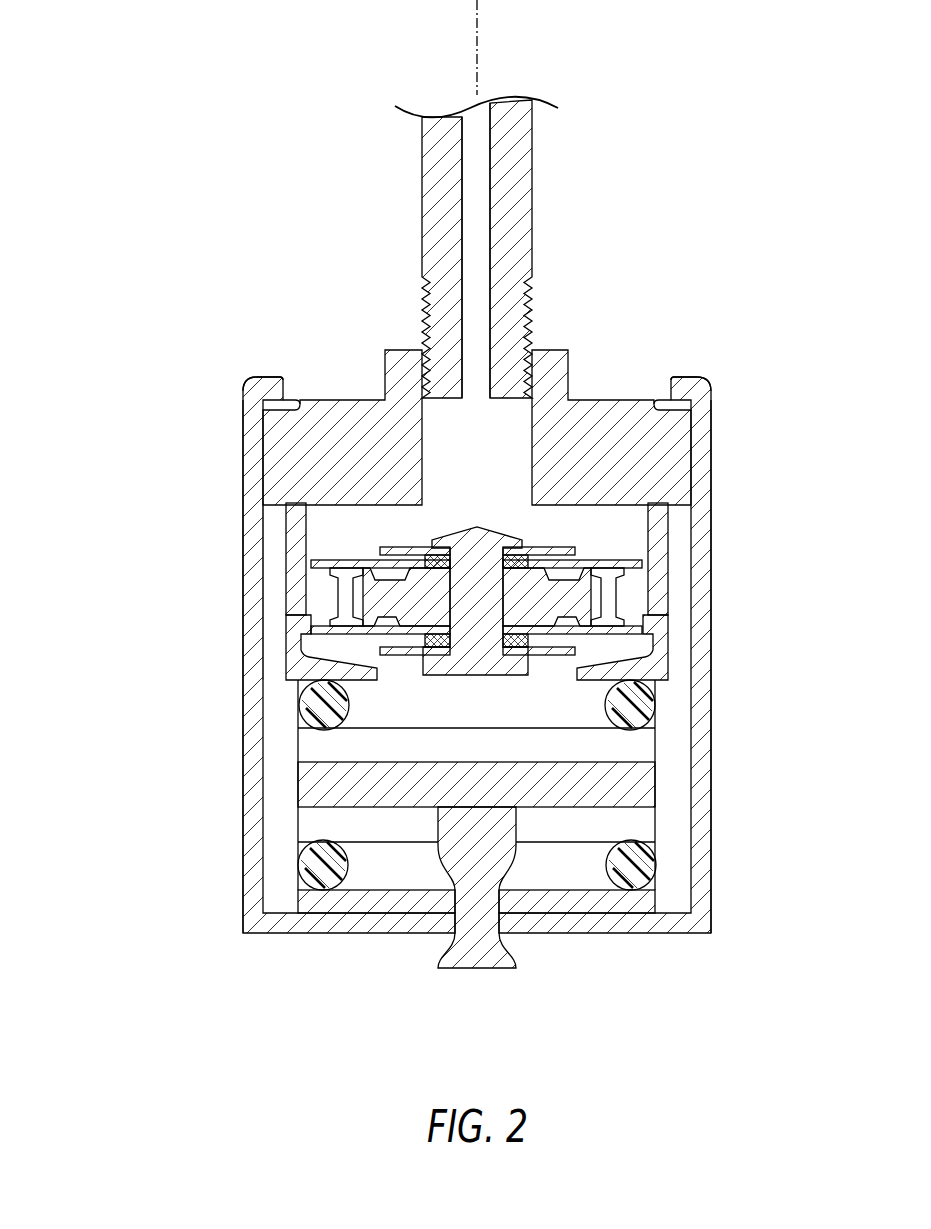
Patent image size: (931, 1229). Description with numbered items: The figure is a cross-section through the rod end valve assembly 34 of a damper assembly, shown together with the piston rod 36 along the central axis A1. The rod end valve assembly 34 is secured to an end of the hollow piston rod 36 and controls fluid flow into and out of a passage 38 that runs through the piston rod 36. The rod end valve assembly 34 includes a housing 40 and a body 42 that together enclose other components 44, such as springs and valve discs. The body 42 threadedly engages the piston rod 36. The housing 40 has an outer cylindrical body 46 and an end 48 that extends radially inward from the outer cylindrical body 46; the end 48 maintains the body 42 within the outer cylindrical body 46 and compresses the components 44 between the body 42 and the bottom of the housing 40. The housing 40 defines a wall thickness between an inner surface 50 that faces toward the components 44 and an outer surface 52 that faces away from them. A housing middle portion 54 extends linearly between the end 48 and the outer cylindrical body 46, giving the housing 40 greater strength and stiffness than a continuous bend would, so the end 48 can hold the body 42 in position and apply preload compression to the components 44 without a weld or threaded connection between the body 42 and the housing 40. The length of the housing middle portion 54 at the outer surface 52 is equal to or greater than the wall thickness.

The central axis A1 is at (478, 40).
The rod end valve assembly 34 is at (108, 675).
The piston rod 36 is at (443, 208).
The passage 38 is at (478, 235).
The housing 40 is at (712, 800).
The body 42 is at (300, 445).
The components 44 is at (405, 708).
The outer cylindrical body 46 is at (242, 752).
The end 48 is at (285, 392).
The inner surface 50 is at (265, 590).
The outer surface 52 is at (242, 540).
The housing middle portion 54 is at (246, 385).